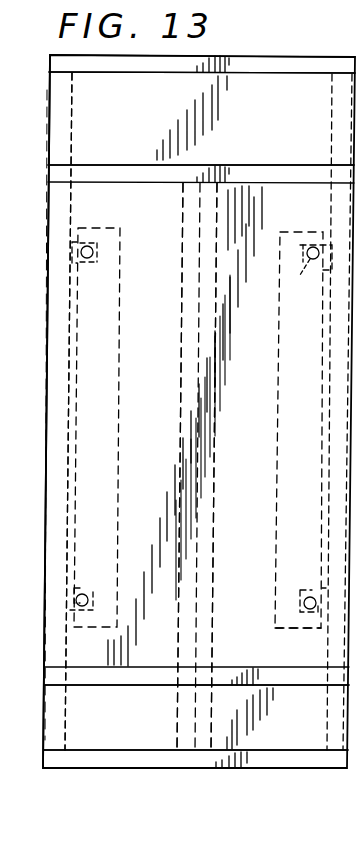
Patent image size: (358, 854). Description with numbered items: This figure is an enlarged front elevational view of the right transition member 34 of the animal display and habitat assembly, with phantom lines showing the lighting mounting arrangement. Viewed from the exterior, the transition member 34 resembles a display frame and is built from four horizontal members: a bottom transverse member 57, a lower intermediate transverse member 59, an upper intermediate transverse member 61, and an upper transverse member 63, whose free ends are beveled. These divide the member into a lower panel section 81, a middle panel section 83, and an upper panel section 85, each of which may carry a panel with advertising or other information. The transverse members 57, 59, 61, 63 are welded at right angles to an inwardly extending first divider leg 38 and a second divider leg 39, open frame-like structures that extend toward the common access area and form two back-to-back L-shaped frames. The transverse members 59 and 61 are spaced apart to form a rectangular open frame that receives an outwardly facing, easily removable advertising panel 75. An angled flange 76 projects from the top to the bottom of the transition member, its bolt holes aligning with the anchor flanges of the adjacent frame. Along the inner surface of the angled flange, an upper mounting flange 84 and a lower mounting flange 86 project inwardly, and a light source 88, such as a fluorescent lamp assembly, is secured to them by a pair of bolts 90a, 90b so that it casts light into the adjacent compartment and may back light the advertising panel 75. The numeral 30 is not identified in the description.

The frame 30 is at (178, 411).
The right transition member 34 is at (263, 53).
The first divider leg 38 is at (182, 298).
The second divider leg 39 is at (214, 531).
The bottom transverse member 57 is at (110, 760).
The lower intermediate transverse member 59 is at (92, 672).
The upper intermediate transverse member 61 is at (97, 172).
The upper transverse member 63 is at (135, 66).
The advertising panel 75 is at (49, 192).
The angled flange 76 is at (58, 436).
The lower panel section 81 is at (306, 737).
The middle panel section 83 is at (166, 432).
The upper mounting flange 84 is at (306, 250).
The upper panel section 85 is at (283, 137).
The lower mounting flange 86 is at (308, 597).
The light source 88 is at (277, 360).
The bolt 90a is at (307, 266).
The bolt 90b is at (300, 612).